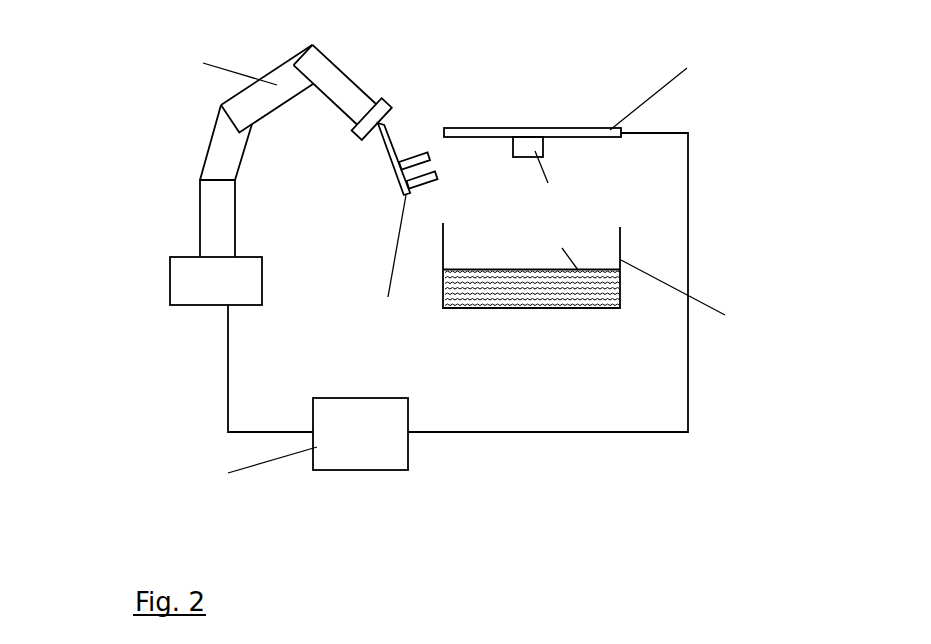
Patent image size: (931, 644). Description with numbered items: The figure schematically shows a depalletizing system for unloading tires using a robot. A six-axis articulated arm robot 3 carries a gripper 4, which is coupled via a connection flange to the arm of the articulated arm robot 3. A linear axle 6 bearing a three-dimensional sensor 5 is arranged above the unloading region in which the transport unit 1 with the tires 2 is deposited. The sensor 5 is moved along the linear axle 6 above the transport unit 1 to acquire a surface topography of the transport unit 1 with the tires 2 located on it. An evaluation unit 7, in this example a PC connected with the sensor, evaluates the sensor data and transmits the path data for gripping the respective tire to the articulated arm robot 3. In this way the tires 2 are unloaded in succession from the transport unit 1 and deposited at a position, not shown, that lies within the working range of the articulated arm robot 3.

The transport unit 1 is at (622, 243).
The tires 2 is at (538, 288).
The articulated arm robot 3 is at (230, 142).
The gripper 4 is at (397, 163).
The 3D sensor 5 is at (527, 146).
The linear axle 6 is at (582, 127).
The evaluation unit 7 is at (375, 450).